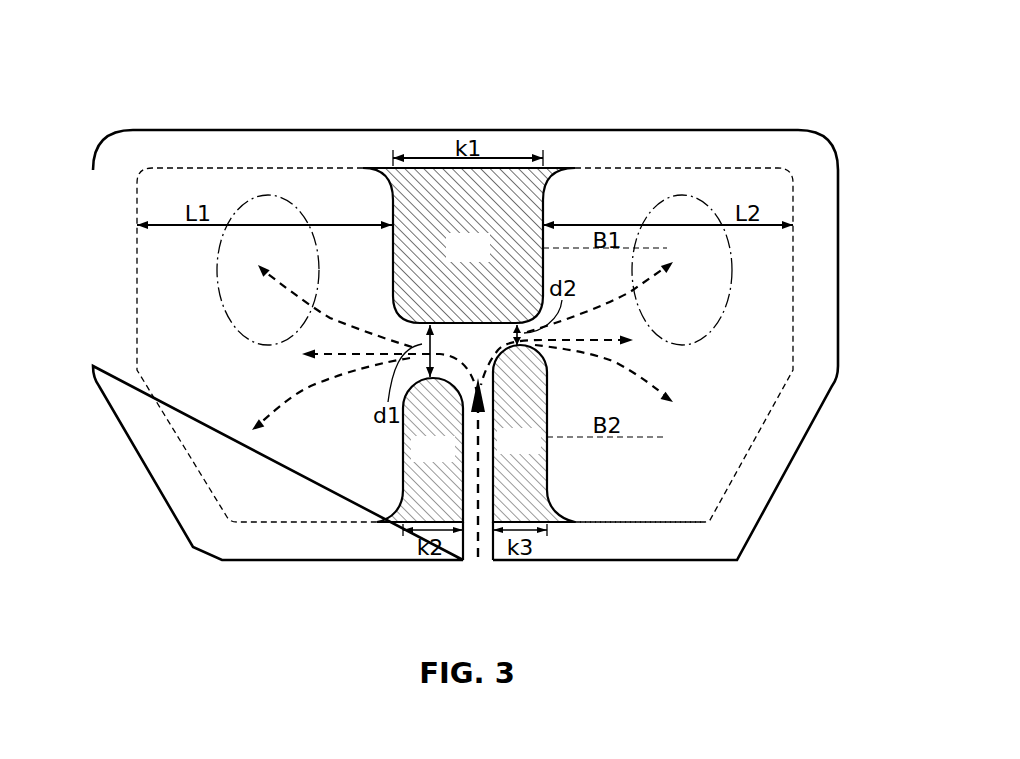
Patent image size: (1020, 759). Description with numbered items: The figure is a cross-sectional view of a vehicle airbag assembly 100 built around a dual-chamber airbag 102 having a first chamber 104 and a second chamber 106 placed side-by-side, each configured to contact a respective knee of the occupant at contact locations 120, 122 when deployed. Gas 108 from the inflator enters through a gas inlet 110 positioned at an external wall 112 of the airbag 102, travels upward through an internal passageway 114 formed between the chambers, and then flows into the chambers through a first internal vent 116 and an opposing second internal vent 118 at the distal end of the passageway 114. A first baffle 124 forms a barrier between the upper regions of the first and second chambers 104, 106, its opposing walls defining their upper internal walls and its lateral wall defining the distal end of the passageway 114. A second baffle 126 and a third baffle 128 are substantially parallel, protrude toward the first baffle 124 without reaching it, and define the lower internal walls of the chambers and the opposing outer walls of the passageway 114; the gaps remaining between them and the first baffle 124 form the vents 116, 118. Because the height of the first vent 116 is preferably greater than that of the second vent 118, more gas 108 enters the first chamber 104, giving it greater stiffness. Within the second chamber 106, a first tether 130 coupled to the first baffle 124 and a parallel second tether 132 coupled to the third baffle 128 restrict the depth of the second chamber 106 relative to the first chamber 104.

The airbag assembly 100 is at (756, 130).
The dual-chamber airbag 102 is at (793, 253).
The first chamber 104 is at (192, 376).
The second chamber 106 is at (723, 375).
The gas 108 is at (470, 536).
The gas inlet 110 is at (487, 566).
The external wall 112 is at (637, 522).
The internal passageway 114 is at (466, 499).
The first internal vent 116 is at (412, 340).
The second internal vent 118 is at (530, 337).
The contact location 120 is at (218, 285).
The contact location 122 is at (732, 253).
The first baffle 124 is at (448, 258).
The second baffle 126 is at (453, 460).
The third baffle 128 is at (539, 452).
The first tether 130 is at (592, 250).
The second tether 132 is at (607, 440).